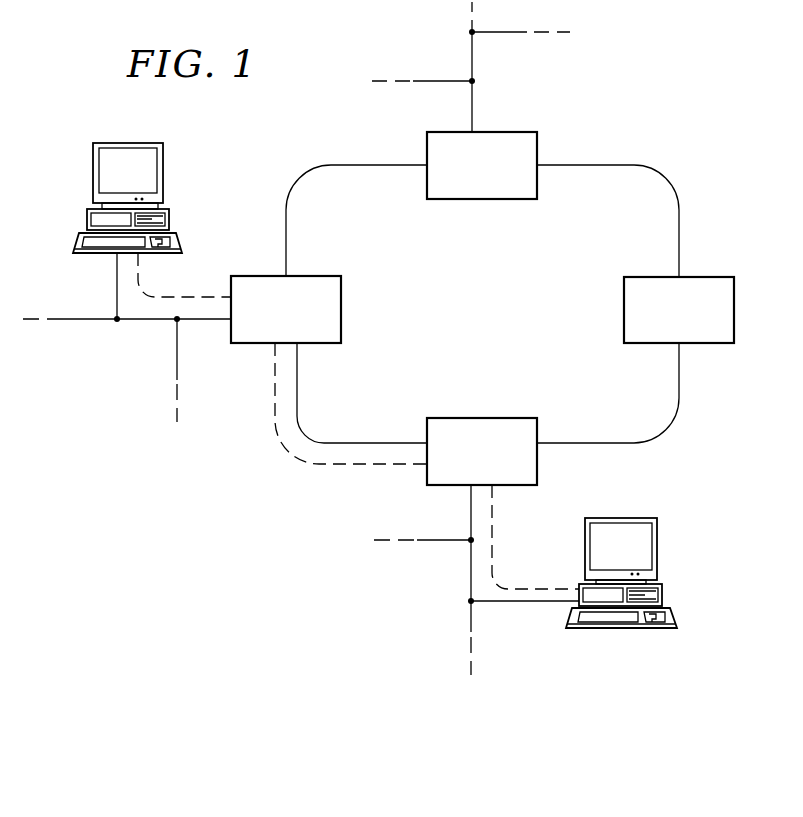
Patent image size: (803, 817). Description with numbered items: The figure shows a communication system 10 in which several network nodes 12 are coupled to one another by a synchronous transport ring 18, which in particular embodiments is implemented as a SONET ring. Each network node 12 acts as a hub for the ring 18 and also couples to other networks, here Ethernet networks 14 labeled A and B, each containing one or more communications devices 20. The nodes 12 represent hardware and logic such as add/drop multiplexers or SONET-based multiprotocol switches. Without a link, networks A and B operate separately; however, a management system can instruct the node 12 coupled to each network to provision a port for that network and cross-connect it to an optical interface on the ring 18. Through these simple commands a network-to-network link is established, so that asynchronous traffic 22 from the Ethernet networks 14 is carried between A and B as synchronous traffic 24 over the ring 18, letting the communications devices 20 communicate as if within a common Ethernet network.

The communication system 10 is at (228, 503).
The network node 12 is at (341, 308).
The Ethernet network 14 is at (402, 42).
The synchronous transport ring 18 is at (373, 165).
The communications device 20 is at (93, 173).
The asynchronous traffic 22 is at (188, 297).
The synchronous traffic 24 is at (382, 466).